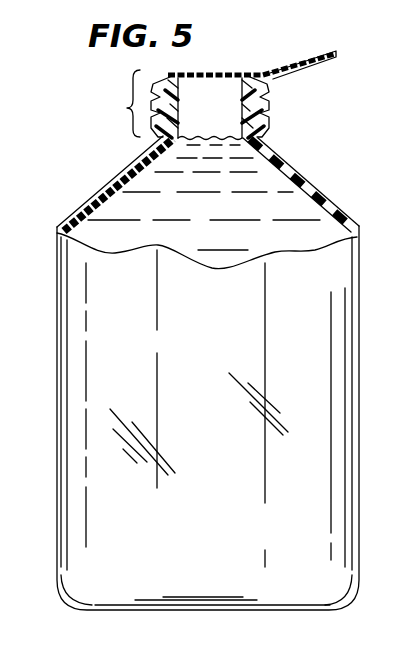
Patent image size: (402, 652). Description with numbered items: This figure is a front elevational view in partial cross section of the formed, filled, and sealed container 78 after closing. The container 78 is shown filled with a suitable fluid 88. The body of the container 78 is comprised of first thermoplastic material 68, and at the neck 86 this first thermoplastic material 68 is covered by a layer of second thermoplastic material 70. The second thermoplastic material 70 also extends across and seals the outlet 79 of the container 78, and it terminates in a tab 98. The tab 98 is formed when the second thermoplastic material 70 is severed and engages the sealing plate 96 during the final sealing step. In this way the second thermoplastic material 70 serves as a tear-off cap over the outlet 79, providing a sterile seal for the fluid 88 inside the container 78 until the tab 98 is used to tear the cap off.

The first thermoplastic material 68 is at (232, 72).
The tab 98 is at (306, 76).
The second thermoplastic material 70 is at (269, 117).
The neck 86 is at (126, 108).
The outlet 79 is at (219, 117).
The fluid 88 is at (222, 216).
The container 78 is at (44, 289).
The sealing plate 96 is at (0, 332).